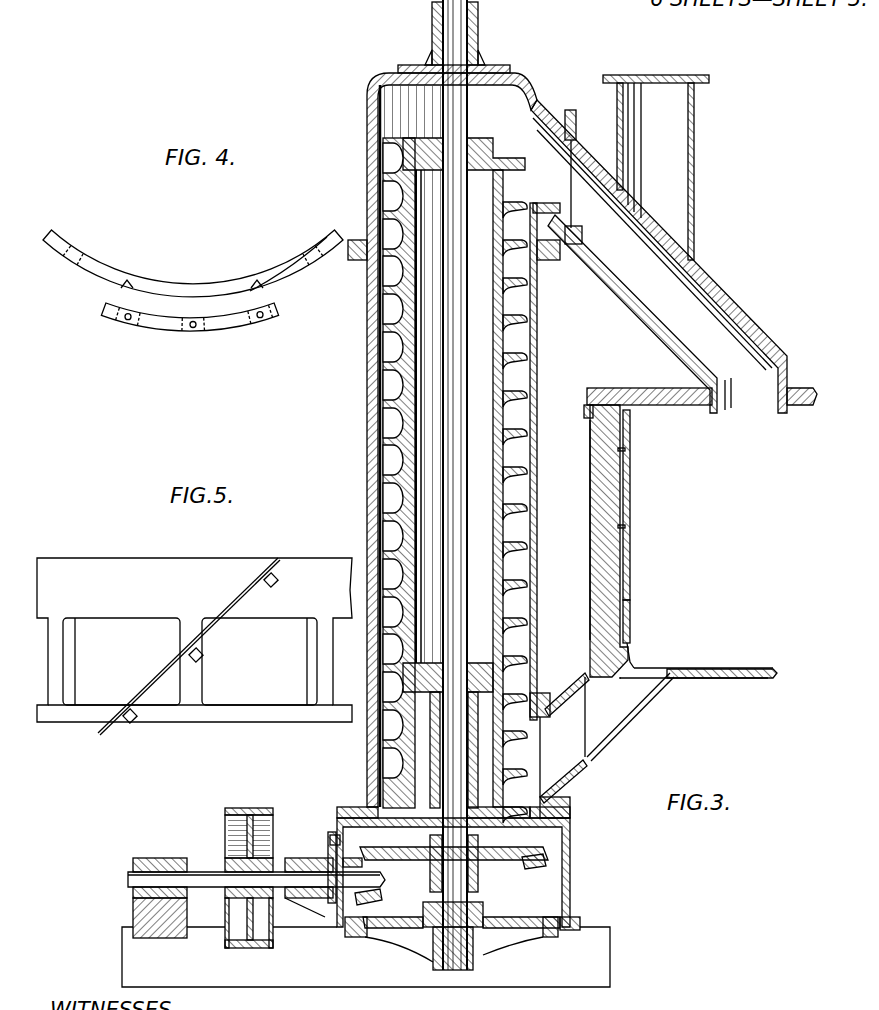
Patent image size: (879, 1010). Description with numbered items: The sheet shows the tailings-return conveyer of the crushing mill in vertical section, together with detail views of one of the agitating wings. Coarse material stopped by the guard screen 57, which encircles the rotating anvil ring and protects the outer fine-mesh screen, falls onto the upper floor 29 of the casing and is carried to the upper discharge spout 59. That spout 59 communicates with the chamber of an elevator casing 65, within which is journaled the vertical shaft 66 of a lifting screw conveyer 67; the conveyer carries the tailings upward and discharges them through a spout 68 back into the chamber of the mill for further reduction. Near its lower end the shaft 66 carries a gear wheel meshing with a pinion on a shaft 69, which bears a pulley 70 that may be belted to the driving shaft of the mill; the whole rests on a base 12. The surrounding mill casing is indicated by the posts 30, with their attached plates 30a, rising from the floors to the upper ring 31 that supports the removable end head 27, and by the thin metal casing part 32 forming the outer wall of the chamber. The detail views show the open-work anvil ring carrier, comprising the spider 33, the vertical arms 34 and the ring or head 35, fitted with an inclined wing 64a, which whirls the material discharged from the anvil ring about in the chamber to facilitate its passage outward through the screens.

In FIG. 3, the base 12 is at (366, 957).
In FIG. 3, the upper removable end head 27 is at (633, 388).
In FIG. 3, the upper floor 29 is at (748, 678).
In FIG. 3, the posts 30 is at (590, 540).
In FIG. 3, the plates 30a is at (630, 488).
In FIG. 3, the upper annular portion or ring 31 is at (588, 414).
In FIG. 3, the thin metal casing part 32 is at (590, 490).
In FIG. 5, the spoked head or spider 33 is at (270, 720).
In FIG. 5, the vertical spokes or arms 34 is at (60, 660).
In FIG. 4, the ring or head 35 is at (272, 252).
In FIG. 5, the ring or head 35 is at (178, 580).
In FIG. 3, the guard screen 57 is at (632, 620).
In FIG. 3, the upper discharge spout 59 is at (622, 702).
In FIG. 4, the inclined wings or blades 64a is at (240, 331).
In FIG. 5, the inclined wings or blades 64a is at (230, 610).
In FIG. 3, the elevator casing 65 is at (368, 457).
In FIG. 3, the vertical shaft 66 is at (447, 110).
In FIG. 3, the lifting screw conveyer 67 is at (380, 362).
In FIG. 3, the spout 68 is at (722, 290).
In FIG. 3, the shaft 69 is at (203, 870).
In FIG. 3, the pulley 70 is at (258, 808).